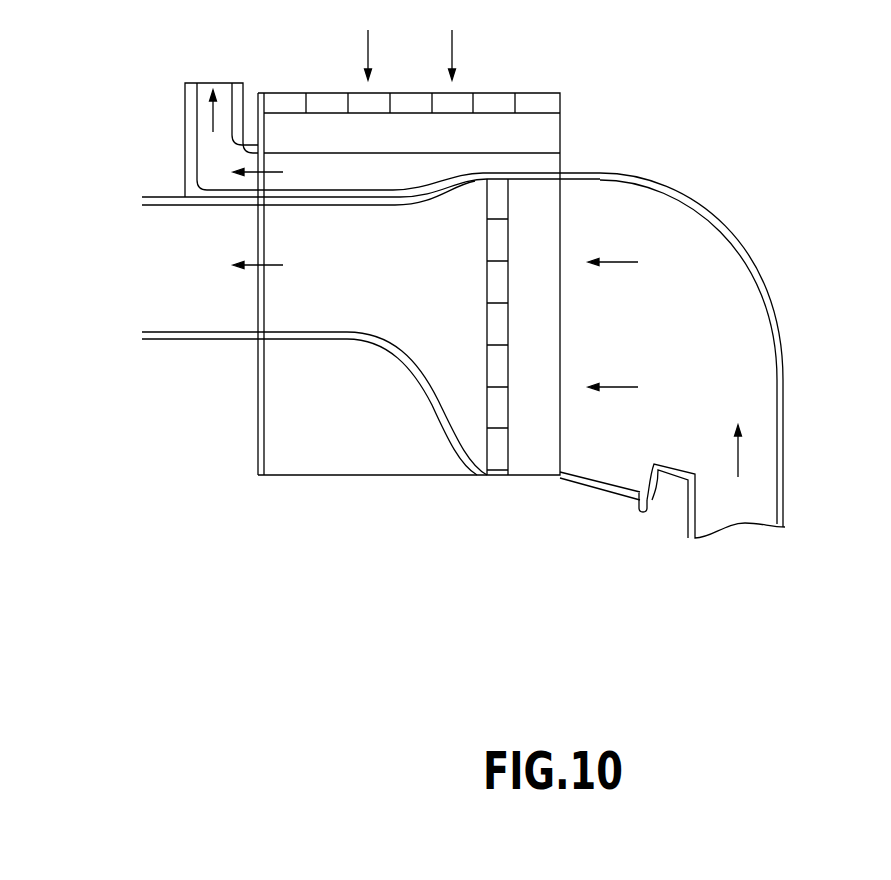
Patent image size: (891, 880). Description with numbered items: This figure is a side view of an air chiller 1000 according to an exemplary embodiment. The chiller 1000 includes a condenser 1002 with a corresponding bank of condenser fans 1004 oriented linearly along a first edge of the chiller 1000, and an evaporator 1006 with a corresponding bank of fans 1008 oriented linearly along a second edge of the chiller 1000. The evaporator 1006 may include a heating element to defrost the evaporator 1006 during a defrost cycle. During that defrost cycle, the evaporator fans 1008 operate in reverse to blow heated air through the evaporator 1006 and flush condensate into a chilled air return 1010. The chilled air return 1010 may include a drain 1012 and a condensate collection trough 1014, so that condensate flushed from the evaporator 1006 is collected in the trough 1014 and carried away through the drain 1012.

The air chiller 1000 is at (504, 298).
The condenser 1002 is at (335, 132).
The bank of condenser fans 1004 is at (495, 105).
The evaporator 1006 is at (532, 228).
The bank of evaporator fans 1008 is at (498, 198).
The chilled air return 1010 is at (713, 247).
The drain 1012 is at (643, 513).
The condensate collection trough 1014 is at (615, 466).